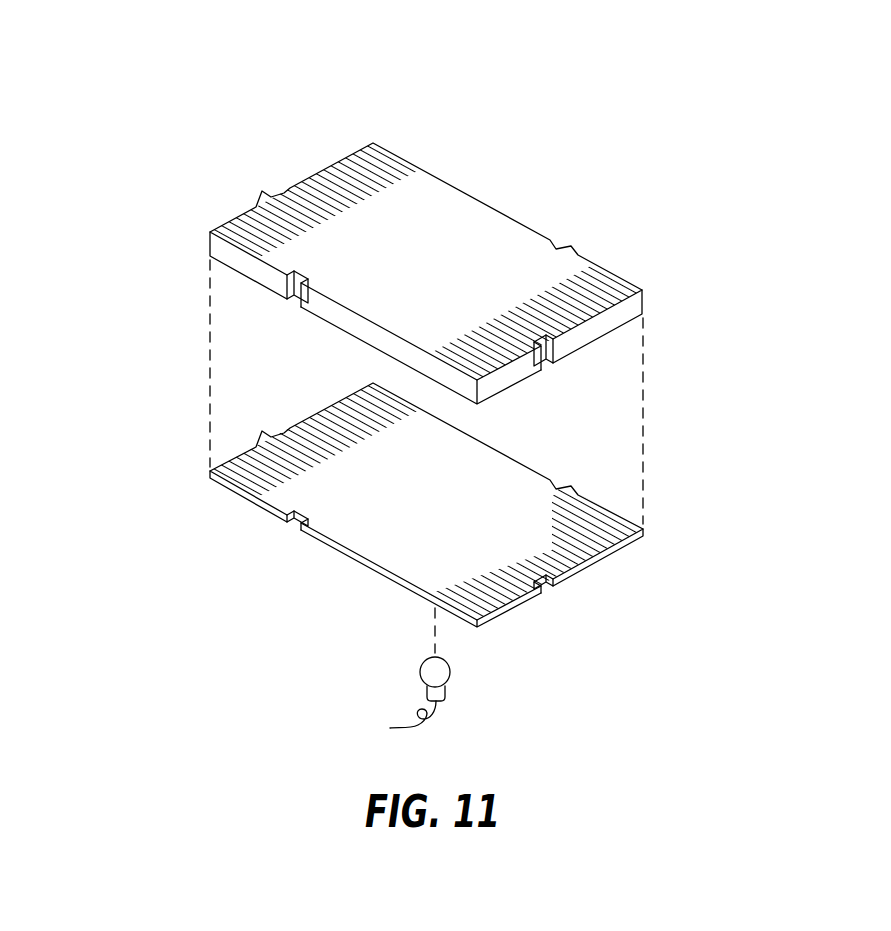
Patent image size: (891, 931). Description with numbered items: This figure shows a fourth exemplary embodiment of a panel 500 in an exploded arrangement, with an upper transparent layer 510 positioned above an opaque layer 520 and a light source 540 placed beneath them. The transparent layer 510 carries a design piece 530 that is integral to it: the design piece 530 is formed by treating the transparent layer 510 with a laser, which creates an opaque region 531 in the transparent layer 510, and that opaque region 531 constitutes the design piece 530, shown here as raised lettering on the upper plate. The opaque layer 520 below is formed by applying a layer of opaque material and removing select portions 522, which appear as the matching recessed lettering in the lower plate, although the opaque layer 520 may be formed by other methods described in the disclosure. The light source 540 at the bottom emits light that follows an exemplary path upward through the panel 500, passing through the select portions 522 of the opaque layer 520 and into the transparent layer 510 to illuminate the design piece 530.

The panel 500 is at (827, 151).
The transparent layer 510 is at (582, 277).
The opaque layer 520 is at (495, 470).
The select portions 522 is at (537, 528).
The design piece 530 is at (309, 183).
The opaque region 531 is at (437, 228).
The light source 540 is at (452, 667).